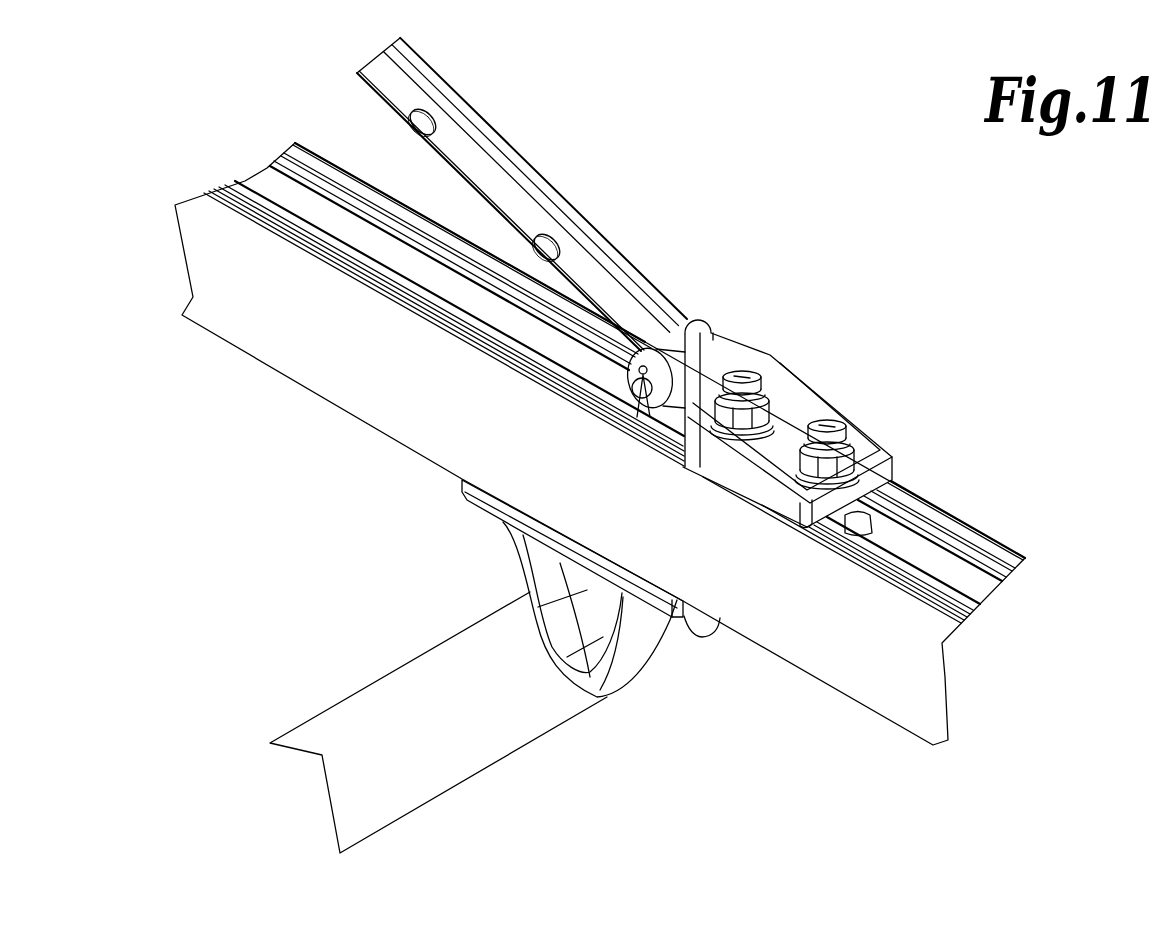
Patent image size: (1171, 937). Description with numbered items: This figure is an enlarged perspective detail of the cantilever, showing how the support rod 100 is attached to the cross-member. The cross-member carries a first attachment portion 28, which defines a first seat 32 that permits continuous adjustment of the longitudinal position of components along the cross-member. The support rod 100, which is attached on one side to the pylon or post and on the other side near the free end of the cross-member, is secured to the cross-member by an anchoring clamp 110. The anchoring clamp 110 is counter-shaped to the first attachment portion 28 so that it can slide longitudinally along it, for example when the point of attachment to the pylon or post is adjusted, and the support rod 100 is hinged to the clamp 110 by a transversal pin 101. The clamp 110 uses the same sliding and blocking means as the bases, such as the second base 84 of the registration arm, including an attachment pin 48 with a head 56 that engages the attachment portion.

The first attachment portion 28 is at (617, 444).
The first seat 32 is at (915, 557).
The attachment pin 48 is at (845, 424).
The head 56 is at (853, 520).
The second base 84 is at (483, 506).
The support rod 100 is at (530, 171).
The transversal pin 101 is at (642, 404).
The anchoring clamp 110 is at (808, 368).